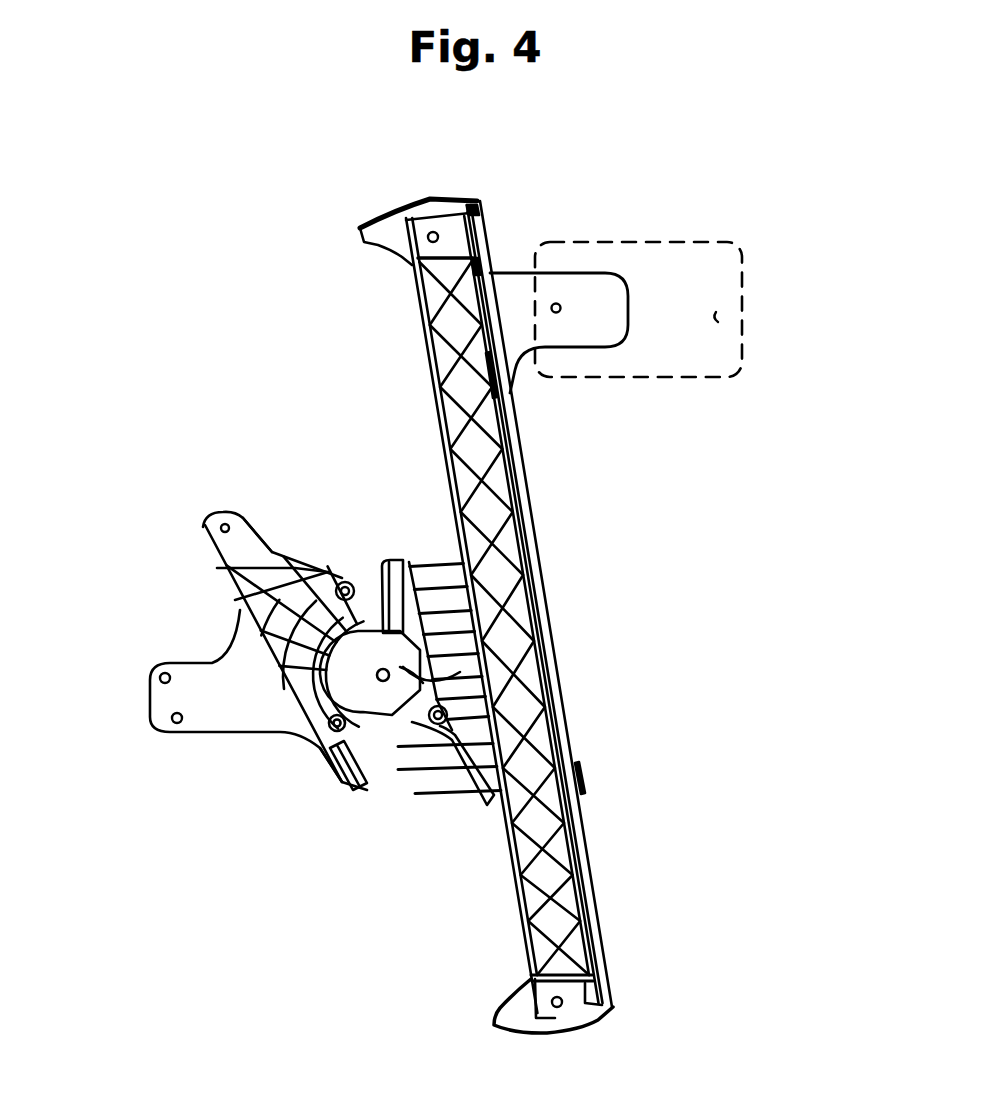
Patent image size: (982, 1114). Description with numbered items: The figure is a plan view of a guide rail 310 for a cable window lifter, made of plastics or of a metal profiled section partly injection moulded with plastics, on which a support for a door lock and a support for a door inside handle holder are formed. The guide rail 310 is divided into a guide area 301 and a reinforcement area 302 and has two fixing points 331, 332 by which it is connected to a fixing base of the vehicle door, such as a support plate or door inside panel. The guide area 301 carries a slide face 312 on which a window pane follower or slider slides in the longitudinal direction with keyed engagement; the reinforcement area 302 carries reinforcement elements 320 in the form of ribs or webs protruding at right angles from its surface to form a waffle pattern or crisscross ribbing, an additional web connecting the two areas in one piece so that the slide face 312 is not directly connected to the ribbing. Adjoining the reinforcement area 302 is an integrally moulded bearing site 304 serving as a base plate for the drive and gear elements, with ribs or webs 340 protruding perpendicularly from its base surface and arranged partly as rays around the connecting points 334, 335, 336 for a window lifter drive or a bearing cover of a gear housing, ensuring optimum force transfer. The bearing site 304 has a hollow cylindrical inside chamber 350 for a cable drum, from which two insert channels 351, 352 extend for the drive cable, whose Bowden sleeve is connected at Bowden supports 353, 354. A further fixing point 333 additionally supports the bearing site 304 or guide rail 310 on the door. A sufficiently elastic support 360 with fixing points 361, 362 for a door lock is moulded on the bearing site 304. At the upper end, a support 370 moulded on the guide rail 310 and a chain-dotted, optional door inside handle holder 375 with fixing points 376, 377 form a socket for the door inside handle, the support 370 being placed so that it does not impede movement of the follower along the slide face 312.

The guide area 301 is at (550, 601).
The reinforcement area 302 is at (418, 338).
The bearing site 304 is at (233, 617).
The guide rail 310 is at (557, 469).
The slide face 312 is at (570, 766).
The reinforcement elements 320 is at (530, 887).
The fixing point 331 is at (435, 236).
The fixing point 332 is at (562, 1004).
The further fixing point 333 is at (224, 529).
The connecting point 334 is at (333, 568).
The connecting point 335 is at (320, 748).
The connecting point 336 is at (423, 768).
The ribs or webs 340 is at (392, 558).
The hollow cylindrical inside chamber 350 is at (405, 669).
The insert channel 351 is at (346, 582).
The insert channel 352 is at (382, 768).
The Bowden support 353 is at (380, 558).
The Bowden support 354 is at (350, 788).
The support 360 is at (228, 715).
The fixing point 361 is at (150, 692).
The fixing point 362 is at (170, 730).
The support 370 is at (596, 316).
The door inside handle holder 375 is at (660, 262).
The fixing point 376 is at (560, 307).
The fixing point 377 is at (716, 312).